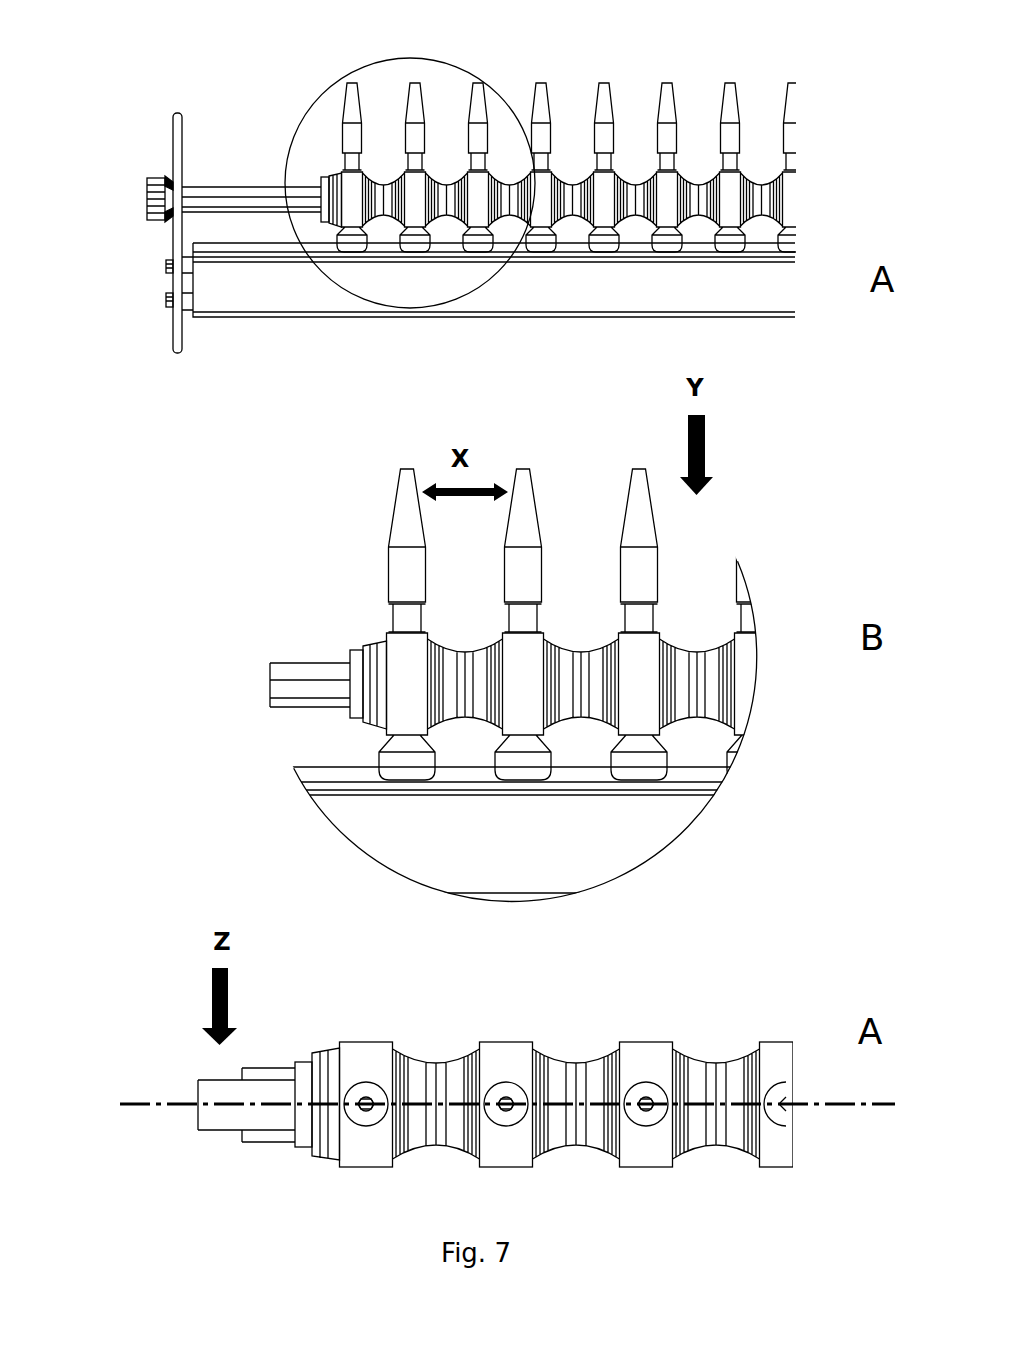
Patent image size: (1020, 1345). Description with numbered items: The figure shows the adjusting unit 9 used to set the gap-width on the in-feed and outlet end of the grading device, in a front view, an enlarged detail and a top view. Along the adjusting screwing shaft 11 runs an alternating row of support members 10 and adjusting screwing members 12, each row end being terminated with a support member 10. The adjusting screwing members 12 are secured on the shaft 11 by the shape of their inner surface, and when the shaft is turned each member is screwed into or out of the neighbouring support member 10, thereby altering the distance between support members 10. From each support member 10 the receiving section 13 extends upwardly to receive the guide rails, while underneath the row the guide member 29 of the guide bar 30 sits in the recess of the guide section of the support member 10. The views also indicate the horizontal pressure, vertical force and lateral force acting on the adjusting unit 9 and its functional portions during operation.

The adjusting unit 9 is at (176, 150).
The support member 10 is at (402, 672).
The adjusting screwing shaft 11 is at (246, 196).
The adjusting screwing member 12 is at (700, 706).
The receiving section 13 is at (720, 100).
The guide member 29 is at (216, 243).
The guide bar 30 is at (248, 300).